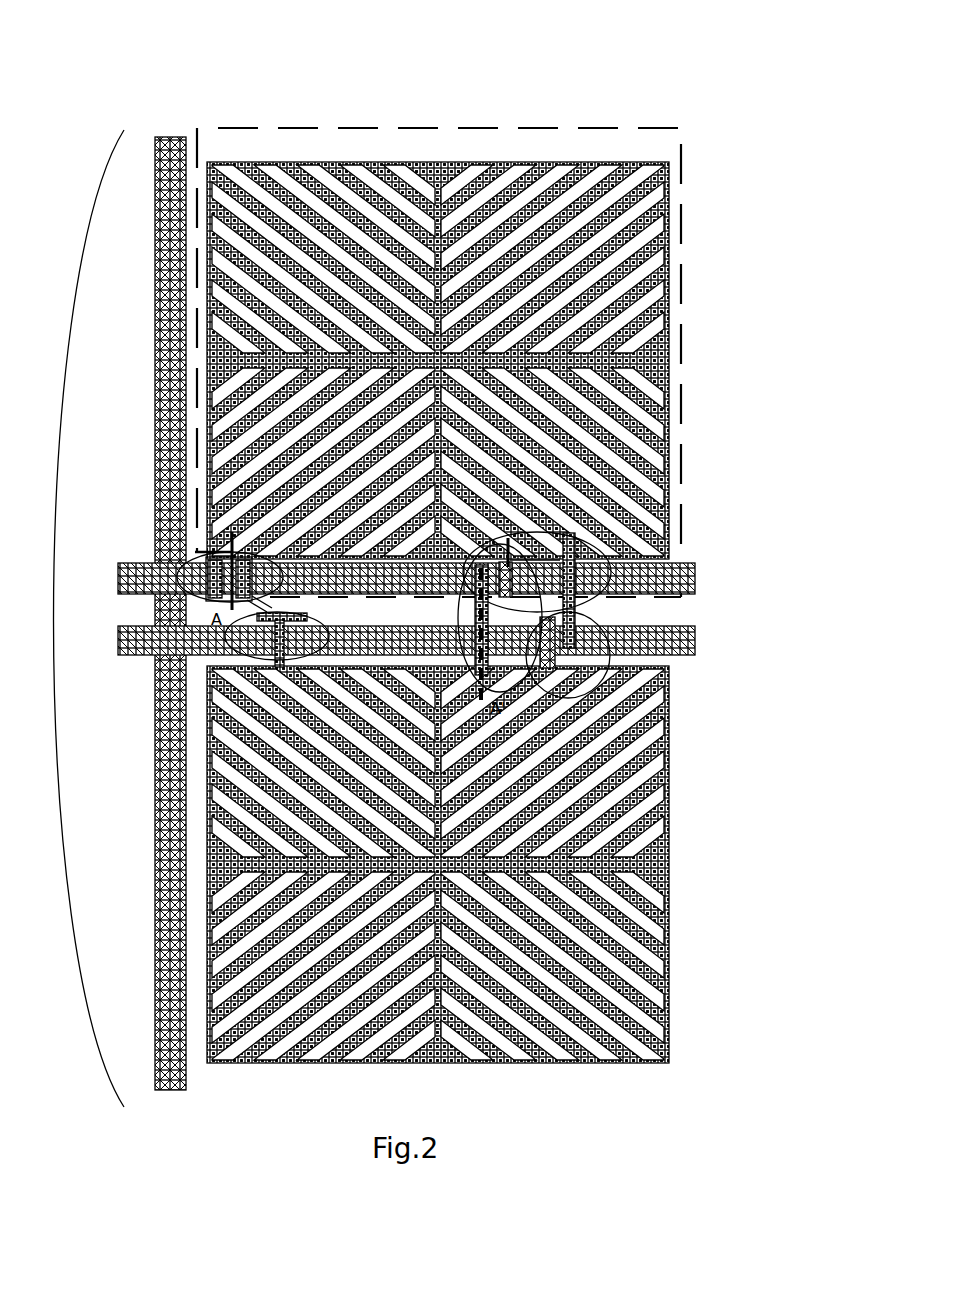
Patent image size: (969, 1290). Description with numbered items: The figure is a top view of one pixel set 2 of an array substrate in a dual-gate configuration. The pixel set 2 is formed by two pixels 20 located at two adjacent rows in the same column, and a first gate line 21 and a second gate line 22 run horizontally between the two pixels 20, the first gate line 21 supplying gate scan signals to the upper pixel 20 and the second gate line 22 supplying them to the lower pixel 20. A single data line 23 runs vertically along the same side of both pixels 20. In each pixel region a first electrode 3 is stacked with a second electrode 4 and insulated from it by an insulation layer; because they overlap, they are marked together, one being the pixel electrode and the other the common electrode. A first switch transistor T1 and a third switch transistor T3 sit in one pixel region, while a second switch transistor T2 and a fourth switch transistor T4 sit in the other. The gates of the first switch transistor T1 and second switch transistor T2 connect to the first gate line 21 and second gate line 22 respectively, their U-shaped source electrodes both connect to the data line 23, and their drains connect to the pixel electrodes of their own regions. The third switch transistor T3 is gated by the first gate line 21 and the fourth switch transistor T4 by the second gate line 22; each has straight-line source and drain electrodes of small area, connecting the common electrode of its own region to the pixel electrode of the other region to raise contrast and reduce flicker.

The pixel set 2 is at (73, 618).
The pixel 20 is at (345, 128).
The first gate line 21 is at (672, 575).
The second gate line 22 is at (683, 643).
The data line 23 is at (175, 137).
The first electrode 3 is at (602, 183).
The second electrode 4 is at (438, 864).
The first switch transistor T1 is at (195, 548).
The second switch transistor T2 is at (282, 667).
The third switch transistor T3 is at (527, 638).
The fourth switch transistor T4 is at (613, 565).